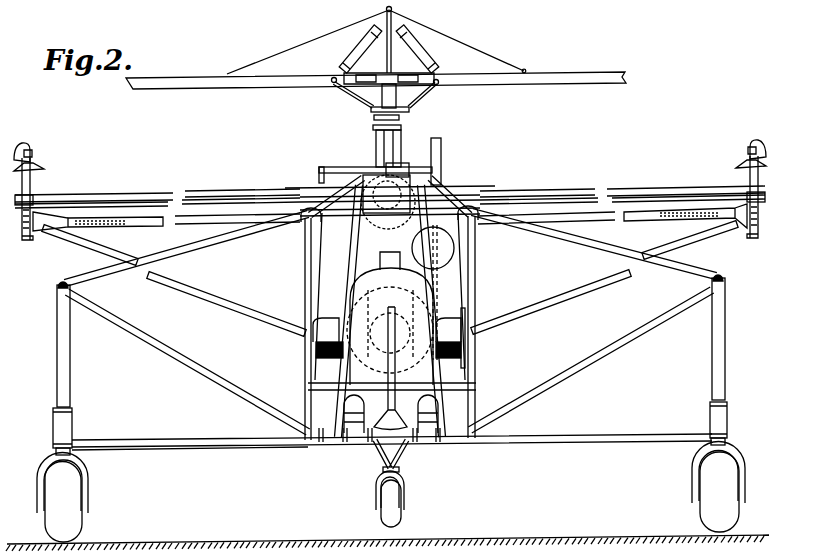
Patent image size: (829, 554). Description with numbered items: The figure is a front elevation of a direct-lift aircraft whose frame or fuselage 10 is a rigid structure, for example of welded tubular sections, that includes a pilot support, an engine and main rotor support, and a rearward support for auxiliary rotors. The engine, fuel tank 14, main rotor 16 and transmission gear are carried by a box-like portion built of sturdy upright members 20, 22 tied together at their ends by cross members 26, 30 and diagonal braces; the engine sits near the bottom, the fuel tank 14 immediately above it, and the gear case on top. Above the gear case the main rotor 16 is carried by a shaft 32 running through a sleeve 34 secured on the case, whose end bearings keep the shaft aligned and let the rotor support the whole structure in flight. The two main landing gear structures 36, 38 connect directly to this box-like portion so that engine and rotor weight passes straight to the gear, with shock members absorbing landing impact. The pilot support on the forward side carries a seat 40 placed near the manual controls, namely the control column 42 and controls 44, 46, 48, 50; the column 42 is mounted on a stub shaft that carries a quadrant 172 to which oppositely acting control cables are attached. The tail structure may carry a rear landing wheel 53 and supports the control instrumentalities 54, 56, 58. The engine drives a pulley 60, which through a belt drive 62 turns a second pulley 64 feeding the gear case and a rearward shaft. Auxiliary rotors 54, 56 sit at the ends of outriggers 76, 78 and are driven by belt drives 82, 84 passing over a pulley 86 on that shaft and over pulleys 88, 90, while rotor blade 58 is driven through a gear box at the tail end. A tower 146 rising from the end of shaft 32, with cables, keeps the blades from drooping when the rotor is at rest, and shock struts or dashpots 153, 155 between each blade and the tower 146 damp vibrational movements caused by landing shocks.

The frame or fuselage 10 is at (463, 442).
The fuel tank 14 is at (456, 249).
The main rotor 16 is at (253, 86).
The upright member 20 is at (304, 278).
The upright member 22 is at (477, 272).
The cross member 26 is at (333, 440).
The cross member 30 is at (348, 227).
The shaft 32 is at (393, 95).
The sleeve 34 is at (379, 147).
The main landing gear structure 36 is at (71, 374).
The main landing gear structure 38 is at (710, 357).
The seat 40 is at (358, 298).
The control column 42 is at (415, 420).
The manual control 44 is at (467, 308).
The manual control 46 is at (390, 285).
The manual control 48 is at (438, 410).
The manual control 50 is at (360, 425).
The rear landing wheel 53 is at (405, 490).
The auxiliary rotor 54 is at (34, 164).
The auxiliary rotor 56 is at (748, 158).
The rotor blade 58 is at (440, 163).
The pulley 60 is at (404, 326).
The belt drive 62 is at (360, 263).
The second pulley 64 is at (406, 166).
The outrigger 76 is at (162, 227).
The outrigger 78 is at (647, 247).
The belt drive 82 is at (144, 188).
The belt drive 84 is at (568, 183).
The pulley 86 is at (388, 222).
The pulley 88 is at (38, 192).
The pulley 90 is at (745, 183).
The tower 146 is at (386, 63).
The shock strut or dashpot 153 is at (348, 53).
The shock strut or dashpot 155 is at (428, 53).
The quadrant 172 is at (375, 447).